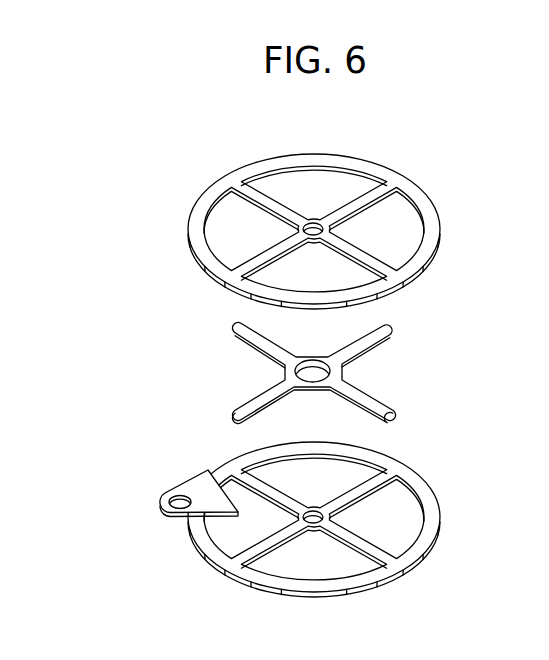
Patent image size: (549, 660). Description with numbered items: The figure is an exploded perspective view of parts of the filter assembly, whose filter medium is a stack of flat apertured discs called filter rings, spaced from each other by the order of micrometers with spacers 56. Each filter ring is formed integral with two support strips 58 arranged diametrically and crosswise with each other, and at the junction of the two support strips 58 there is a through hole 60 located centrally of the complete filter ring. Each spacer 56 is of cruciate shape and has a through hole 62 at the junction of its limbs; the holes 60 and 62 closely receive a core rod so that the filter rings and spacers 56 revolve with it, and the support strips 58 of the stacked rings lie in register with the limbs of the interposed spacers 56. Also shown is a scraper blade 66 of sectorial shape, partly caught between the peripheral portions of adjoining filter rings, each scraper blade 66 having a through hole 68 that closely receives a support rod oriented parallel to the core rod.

The spacer 56 is at (337, 367).
The support strip 58 is at (265, 252).
The through hole 60 is at (310, 221).
The through hole 62 is at (311, 361).
The scraper blade 66 is at (174, 492).
The through hole 68 is at (166, 514).